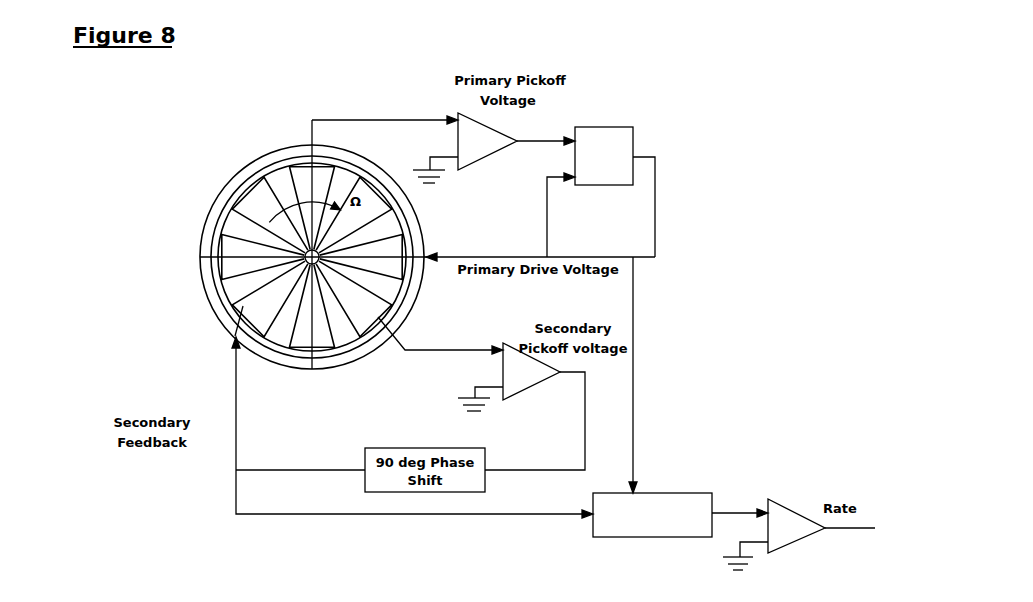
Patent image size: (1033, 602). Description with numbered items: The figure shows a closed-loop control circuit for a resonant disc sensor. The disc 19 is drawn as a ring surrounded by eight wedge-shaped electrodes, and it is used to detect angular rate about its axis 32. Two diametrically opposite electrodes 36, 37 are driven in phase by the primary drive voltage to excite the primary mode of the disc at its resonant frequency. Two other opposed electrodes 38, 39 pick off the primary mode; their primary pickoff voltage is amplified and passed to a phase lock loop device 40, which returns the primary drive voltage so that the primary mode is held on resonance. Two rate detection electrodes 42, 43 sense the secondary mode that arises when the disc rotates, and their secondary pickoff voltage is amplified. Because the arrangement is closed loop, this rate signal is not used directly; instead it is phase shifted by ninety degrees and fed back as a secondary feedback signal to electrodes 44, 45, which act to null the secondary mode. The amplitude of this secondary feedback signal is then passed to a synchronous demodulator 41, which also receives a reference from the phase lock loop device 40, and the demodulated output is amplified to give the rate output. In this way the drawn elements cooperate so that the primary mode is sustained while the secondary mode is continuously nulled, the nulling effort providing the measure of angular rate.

The disc 19 is at (272, 153).
The axis 32 is at (343, 300).
The electrode 36 is at (393, 264).
The electrode 37 is at (225, 242).
The electrode 38 is at (298, 175).
The electrode 39 is at (322, 333).
The phase lock loop device 40 is at (625, 140).
The synchronous demodulator 41 is at (710, 492).
The rate detection electrode 42 is at (380, 318).
The rate detection electrode 43 is at (272, 222).
The electrode 44 is at (243, 307).
The electrode 45 is at (360, 188).